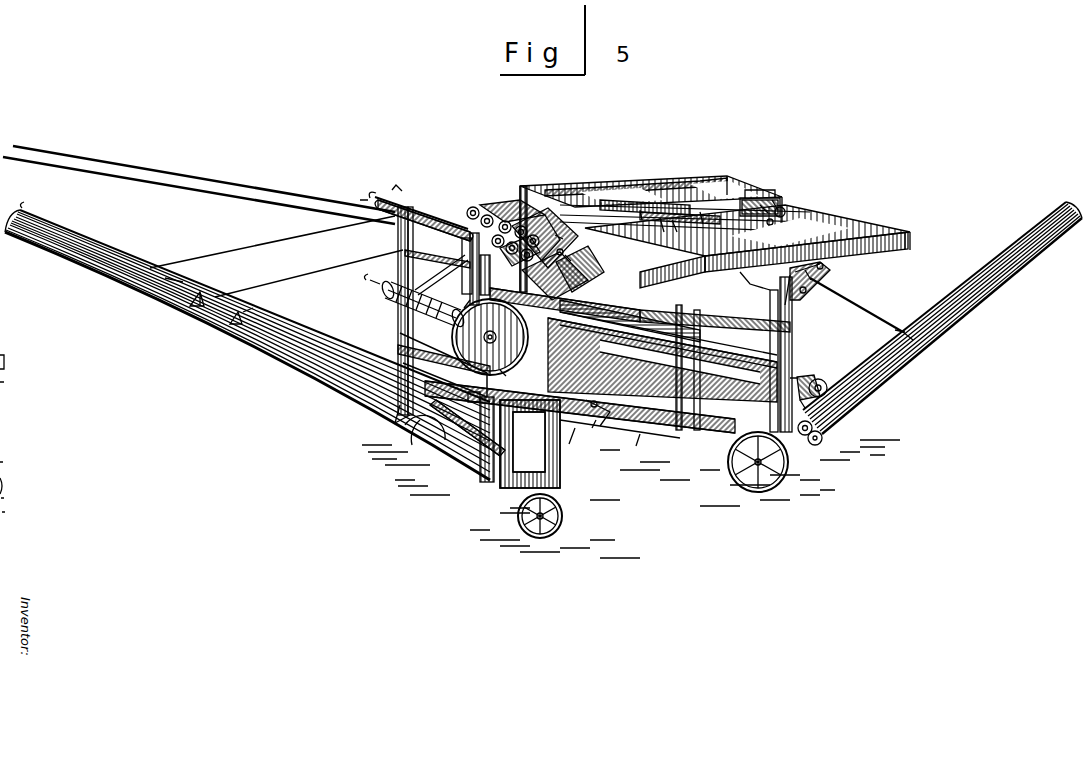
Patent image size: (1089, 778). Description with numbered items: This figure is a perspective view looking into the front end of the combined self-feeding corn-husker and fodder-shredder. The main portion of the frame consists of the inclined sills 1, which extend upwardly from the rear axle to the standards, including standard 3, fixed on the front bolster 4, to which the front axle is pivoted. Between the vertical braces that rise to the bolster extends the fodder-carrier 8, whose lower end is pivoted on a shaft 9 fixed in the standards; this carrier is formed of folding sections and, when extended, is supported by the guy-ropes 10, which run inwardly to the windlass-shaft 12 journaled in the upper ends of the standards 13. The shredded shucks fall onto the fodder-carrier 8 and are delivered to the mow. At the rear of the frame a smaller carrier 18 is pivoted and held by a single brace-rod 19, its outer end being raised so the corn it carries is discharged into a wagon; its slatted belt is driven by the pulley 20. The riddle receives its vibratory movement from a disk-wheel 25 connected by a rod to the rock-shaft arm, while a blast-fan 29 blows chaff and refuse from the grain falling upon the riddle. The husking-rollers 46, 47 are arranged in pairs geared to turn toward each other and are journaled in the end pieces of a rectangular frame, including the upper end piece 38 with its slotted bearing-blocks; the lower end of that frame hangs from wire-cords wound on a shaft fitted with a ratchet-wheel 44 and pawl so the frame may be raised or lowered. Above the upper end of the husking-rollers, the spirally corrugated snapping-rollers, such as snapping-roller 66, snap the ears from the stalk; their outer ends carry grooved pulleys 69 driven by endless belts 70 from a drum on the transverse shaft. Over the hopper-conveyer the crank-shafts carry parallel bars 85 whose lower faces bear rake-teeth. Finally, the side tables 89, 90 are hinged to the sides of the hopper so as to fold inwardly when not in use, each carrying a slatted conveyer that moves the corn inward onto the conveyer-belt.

The inclined sill 1 is at (592, 415).
The standard 3 is at (550, 452).
The front bolster 4 is at (458, 452).
The fodder-carrier 8 is at (247, 341).
The shaft 9 is at (492, 468).
The guy-rope 10 is at (199, 185).
The windlass-shaft 12 is at (413, 212).
The standard 13 is at (424, 218).
The carrier 18 is at (962, 312).
The brace-rod 19 is at (878, 312).
The pulley 20 is at (826, 441).
The disk-wheel 25 is at (596, 432).
The blast-fan 29 is at (590, 456).
The end piece 38 is at (800, 378).
The ratchet-wheel 44 is at (490, 337).
The husking-roller 46 is at (728, 356).
The husking-roller 47 is at (746, 370).
The snapping-roller 66 is at (552, 254).
The grooved pulley 69 is at (472, 208).
The endless belt 70 is at (462, 311).
The bar 85 is at (757, 202).
The side table 89 is at (718, 186).
The side table 90 is at (900, 238).